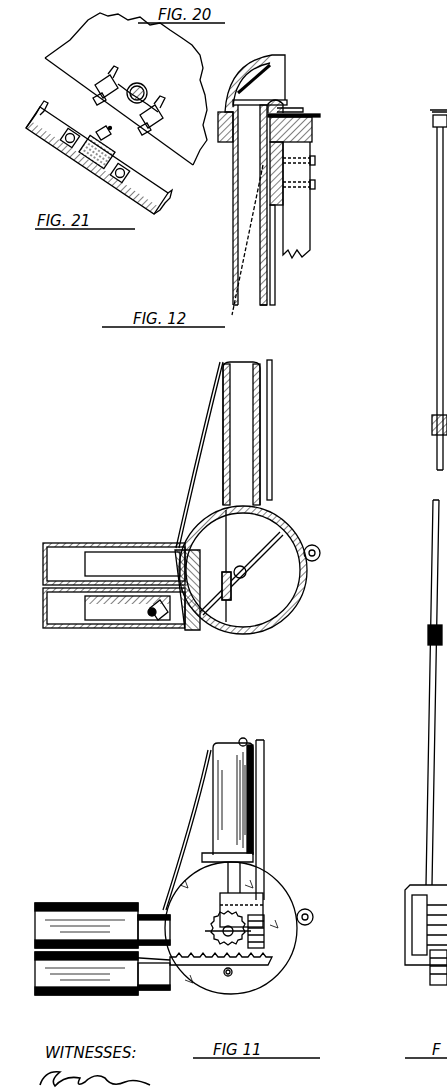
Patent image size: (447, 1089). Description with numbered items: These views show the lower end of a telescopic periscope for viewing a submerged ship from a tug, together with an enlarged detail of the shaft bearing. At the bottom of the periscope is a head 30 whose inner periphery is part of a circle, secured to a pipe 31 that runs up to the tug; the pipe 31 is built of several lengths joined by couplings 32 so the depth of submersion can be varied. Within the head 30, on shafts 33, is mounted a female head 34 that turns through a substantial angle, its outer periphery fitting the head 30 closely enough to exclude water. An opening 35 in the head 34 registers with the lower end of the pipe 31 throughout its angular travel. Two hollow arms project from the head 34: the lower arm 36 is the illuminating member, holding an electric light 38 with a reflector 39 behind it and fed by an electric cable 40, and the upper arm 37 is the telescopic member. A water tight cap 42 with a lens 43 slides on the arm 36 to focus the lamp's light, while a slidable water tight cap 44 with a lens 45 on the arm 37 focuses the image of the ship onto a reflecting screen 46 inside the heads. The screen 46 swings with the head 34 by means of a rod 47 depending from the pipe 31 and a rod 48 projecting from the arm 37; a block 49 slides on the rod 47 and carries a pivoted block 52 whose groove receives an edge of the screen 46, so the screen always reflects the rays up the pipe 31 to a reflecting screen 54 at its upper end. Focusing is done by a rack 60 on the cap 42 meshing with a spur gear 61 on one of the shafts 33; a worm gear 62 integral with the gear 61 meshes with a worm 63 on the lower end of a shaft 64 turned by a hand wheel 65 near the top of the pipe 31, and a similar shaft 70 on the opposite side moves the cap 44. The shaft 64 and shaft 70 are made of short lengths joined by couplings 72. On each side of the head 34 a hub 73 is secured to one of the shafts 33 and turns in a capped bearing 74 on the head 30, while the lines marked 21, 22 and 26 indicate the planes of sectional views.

In FIG. 10, the section line 21- 21 is at (345, 530).
In FIG. 10, the section line 22- 22 is at (282, 675).
In FIG. 10, the section line 26- 26 is at (236, 745).
In FIG. 11, the section line 26- 26 is at (228, 980).
In FIG. 20, the head 30 is at (78, 52).
In FIG. 12, the head 30 is at (248, 192).
In FIG. 10, the head 30 is at (300, 516).
In FIG. 11, the head 30 is at (275, 895).
In FIG. 12, the pipe 31 is at (232, 196).
In FIG. 10, the pipe 31 is at (245, 420).
In FIG. 11, the pipe 31 is at (245, 745).
In FIG. 11, the couplings 32 is at (446, 452).
In FIG. 10, the shafts 33 is at (246, 578).
In FIG. 11, the shafts 33 is at (260, 935).
In FIG. 21, the female head 34 is at (152, 218).
In FIG. 10, the female head 34 is at (285, 628).
In FIG. 11, the female head 34 is at (270, 985).
In FIG. 10, the opening 35 is at (282, 505).
In FIG. 10, the lower arm 36 is at (146, 632).
In FIG. 11, the lower arm 36 is at (160, 990).
In FIG. 10, the upper arm 37 is at (155, 545).
In FIG. 11, the upper arm 37 is at (147, 905).
In FIG. 10, the electric light 38 is at (150, 616).
In FIG. 10, the reflector 39 is at (158, 620).
In FIG. 10, the electric cable 40 is at (200, 460).
In FIG. 11, the electric cable 40 is at (200, 790).
In FIG. 10, the water tight cap 42 is at (50, 628).
In FIG. 11, the water tight cap 42 is at (78, 995).
In FIG. 10, the lens 43 is at (52, 604).
In FIG. 10, the slidable water tight cap 44 is at (112, 547).
In FIG. 11, the slidable water tight cap 44 is at (88, 903).
In FIG. 10, the lens 45 is at (34, 520).
In FIG. 10, the reflecting screen 46 is at (318, 547).
In FIG. 10, the rod 47 is at (225, 548).
In FIG. 10, the rod 48 is at (198, 585).
In FIG. 10, the block 49 is at (225, 600).
In FIG. 10, the block 52 is at (228, 600).
In FIG. 12, the reflecting screen 54 is at (270, 72).
In FIG. 11, the rack 60 is at (206, 978).
In FIG. 11, the spur gear 61 is at (215, 895).
In FIG. 11, the worm gear 62 is at (240, 962).
In FIG. 11, the worm 63 is at (420, 930).
In FIG. 11, the shaft 64 is at (266, 792).
In FIG. 11, the hand wheel 65 is at (437, 112).
In FIG. 12, the shaft 70 is at (276, 293).
In FIG. 11, the couplings 72 is at (434, 422).
In FIG. 20, the hub 73 is at (142, 88).
In FIG. 20, the capped bearing 74 is at (129, 100).
In FIG. 21, the capped bearing 74 is at (100, 128).